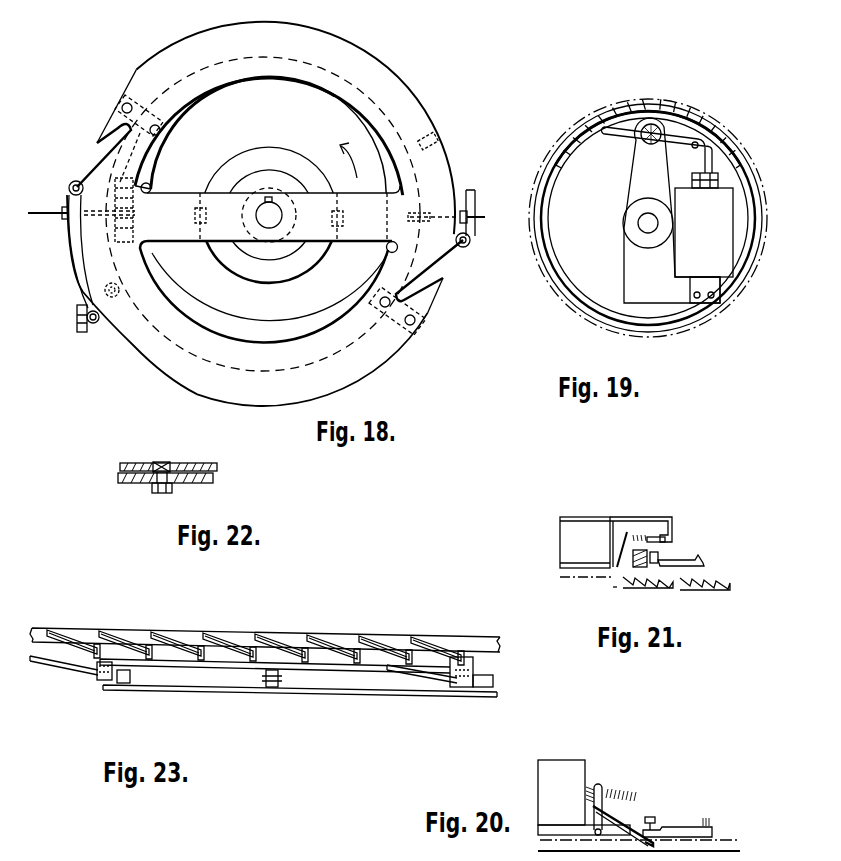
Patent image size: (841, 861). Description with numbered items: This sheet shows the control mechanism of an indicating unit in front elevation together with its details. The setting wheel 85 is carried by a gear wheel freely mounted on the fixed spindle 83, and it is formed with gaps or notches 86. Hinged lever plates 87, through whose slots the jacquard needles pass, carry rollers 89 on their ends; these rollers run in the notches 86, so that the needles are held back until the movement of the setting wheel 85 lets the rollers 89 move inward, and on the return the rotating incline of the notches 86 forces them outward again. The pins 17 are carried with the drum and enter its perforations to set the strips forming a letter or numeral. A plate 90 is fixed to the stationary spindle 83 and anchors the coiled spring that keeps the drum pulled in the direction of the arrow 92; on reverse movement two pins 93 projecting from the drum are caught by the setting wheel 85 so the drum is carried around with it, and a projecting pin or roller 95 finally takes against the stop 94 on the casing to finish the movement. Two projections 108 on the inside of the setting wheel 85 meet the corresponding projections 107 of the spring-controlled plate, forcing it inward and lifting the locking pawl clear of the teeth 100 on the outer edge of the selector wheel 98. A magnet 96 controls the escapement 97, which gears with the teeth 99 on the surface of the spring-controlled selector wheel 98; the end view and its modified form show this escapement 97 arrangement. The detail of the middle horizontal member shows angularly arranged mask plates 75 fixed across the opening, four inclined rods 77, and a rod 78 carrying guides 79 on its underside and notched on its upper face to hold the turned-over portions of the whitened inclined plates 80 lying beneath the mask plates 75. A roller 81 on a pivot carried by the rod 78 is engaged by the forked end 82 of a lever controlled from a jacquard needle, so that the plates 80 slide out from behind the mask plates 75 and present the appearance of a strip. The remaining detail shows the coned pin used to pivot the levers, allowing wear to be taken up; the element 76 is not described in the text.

In FIG. 18, the pins 17 is at (44, 208).
In FIG. 23, the angularly arranged mask plates 75 is at (122, 636).
In FIG. 23, the lower rail 76 is at (328, 689).
In FIG. 23, the inclined rods 77 is at (80, 672).
In FIG. 23, the rod 78 is at (362, 660).
In FIG. 23, the guides 79 is at (105, 682).
In FIG. 23, the inclined plates 80 is at (70, 640).
In FIG. 23, the roller 81 is at (276, 688).
In FIG. 18, the forked end 82 is at (478, 192).
In FIG. 23, the forked end 82 is at (268, 686).
In FIG. 18, the fixed spindle 83 is at (265, 230).
In FIG. 18, the setting wheel 85 is at (342, 48).
In FIG. 18, the gaps or notches 86 is at (118, 142).
In FIG. 18, the hinged lever plates 87 is at (76, 258).
In FIG. 18, the rollers 89 is at (72, 181).
In FIG. 19, the plate 90 is at (632, 256).
In FIG. 18, the arrow 92 is at (337, 149).
In FIG. 18, the pins 93 is at (160, 185).
In FIG. 18, the stop 94 is at (438, 128).
In FIG. 18, the projecting pin or roller 95 is at (122, 302).
In FIG. 19, the magnet 96 is at (684, 202).
In FIG. 21, the magnet 96 is at (572, 527).
In FIG. 20, the magnet 96 is at (560, 768).
In FIG. 19, the escapement 97 is at (730, 112).
In FIG. 21, the escapement 97 is at (662, 568).
In FIG. 20, the escapement 97 is at (665, 824).
In FIG. 19, the selector wheel 98 is at (584, 284).
In FIG. 19, the teeth 99 is at (574, 148).
In FIG. 21, the teeth 99 is at (723, 580).
In FIG. 19, the teeth 100 is at (570, 146).
In FIG. 18, the projections 107 is at (201, 226).
In FIG. 18, the projections 108 is at (196, 223).